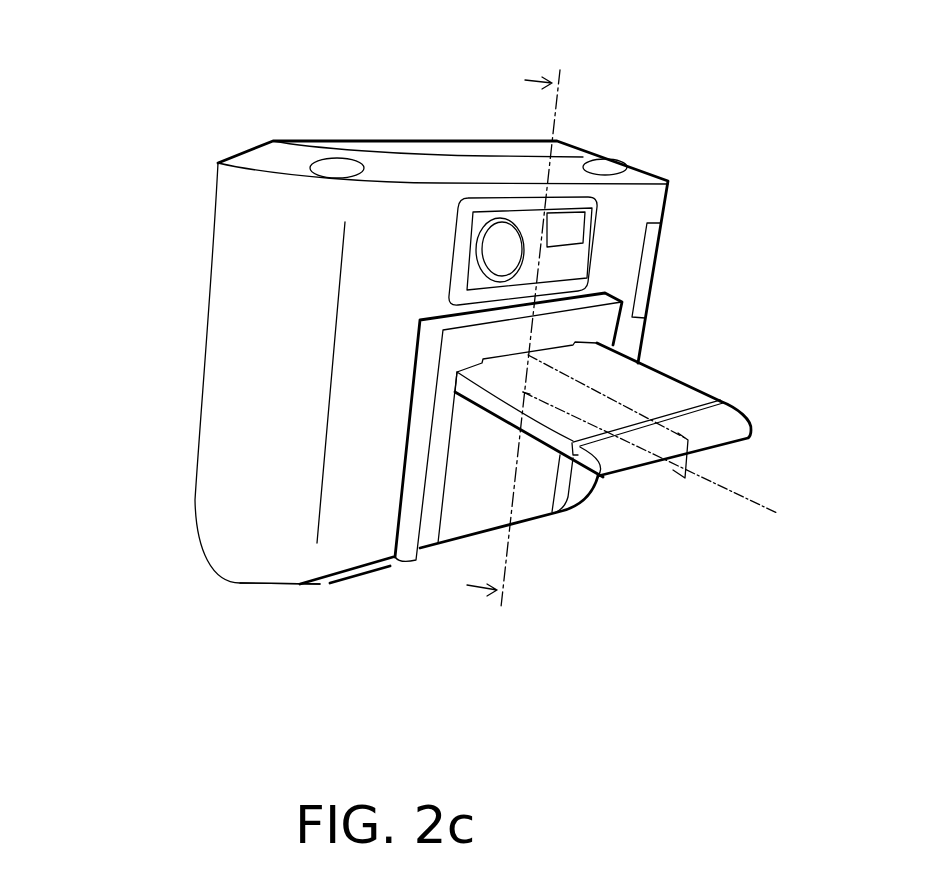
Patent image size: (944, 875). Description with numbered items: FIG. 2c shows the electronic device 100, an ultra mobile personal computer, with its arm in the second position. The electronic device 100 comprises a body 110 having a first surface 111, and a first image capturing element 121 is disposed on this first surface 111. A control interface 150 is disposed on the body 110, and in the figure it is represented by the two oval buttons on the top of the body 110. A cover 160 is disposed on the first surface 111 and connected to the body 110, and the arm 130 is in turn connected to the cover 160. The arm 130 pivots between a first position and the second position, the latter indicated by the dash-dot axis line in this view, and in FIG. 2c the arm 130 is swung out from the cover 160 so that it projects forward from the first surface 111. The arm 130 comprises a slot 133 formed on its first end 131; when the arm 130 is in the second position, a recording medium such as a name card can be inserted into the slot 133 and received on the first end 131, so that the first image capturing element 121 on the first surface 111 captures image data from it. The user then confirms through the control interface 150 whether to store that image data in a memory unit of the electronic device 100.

The electronic device 100 is at (92, 36).
The body 110 is at (194, 337).
The first surface 111 is at (345, 497).
The first image capturing element 121 is at (505, 246).
The arm 130 is at (643, 383).
The first end 131 is at (733, 423).
The slot 133 is at (707, 392).
The control interface 150 is at (333, 167).
The cover 160 is at (437, 485).